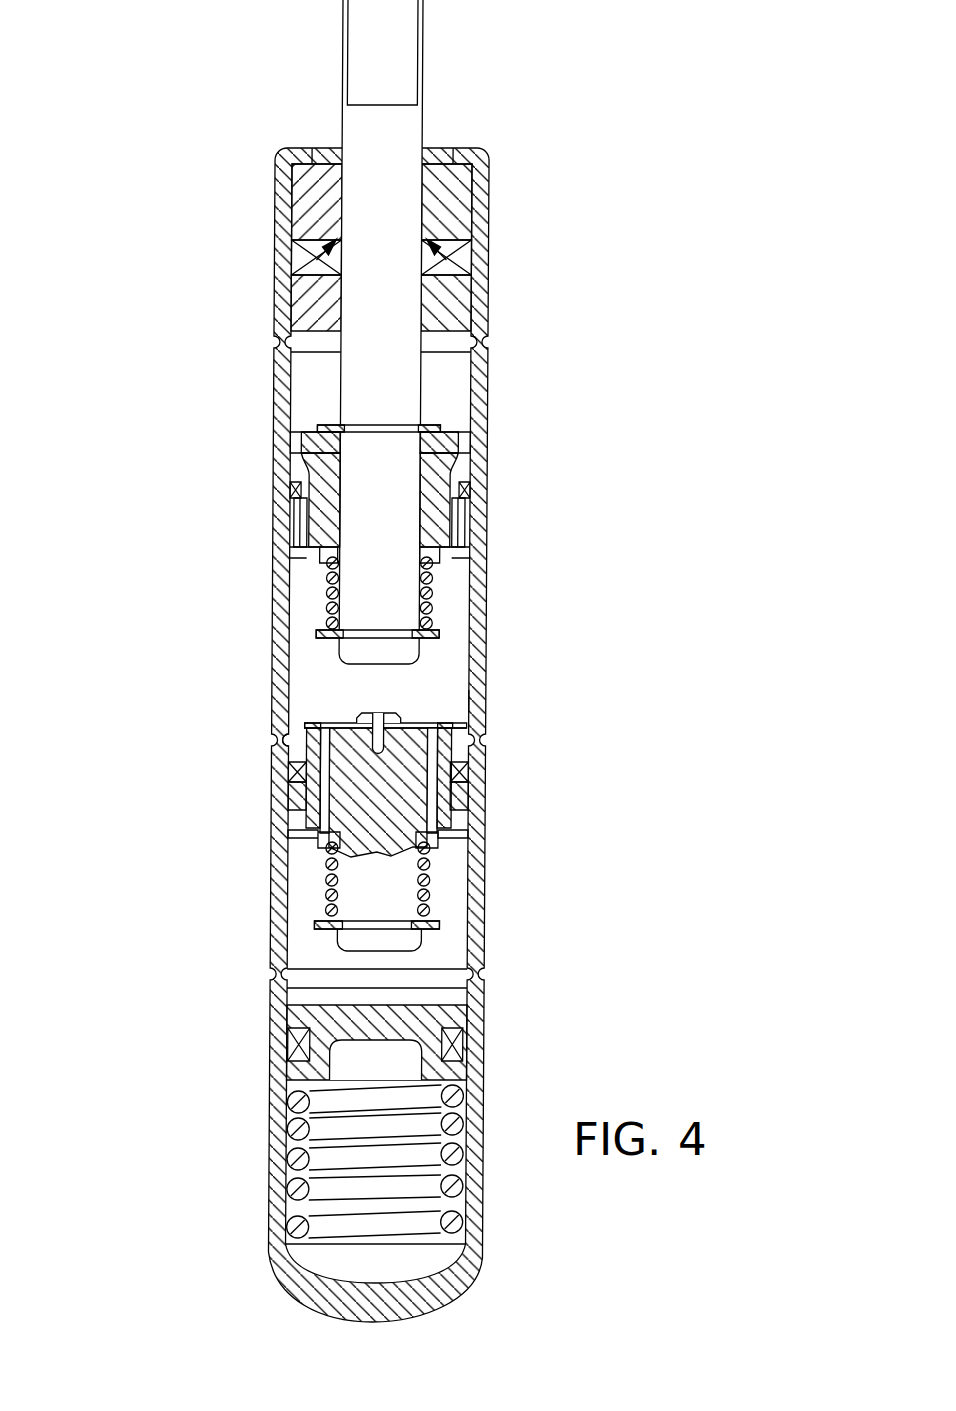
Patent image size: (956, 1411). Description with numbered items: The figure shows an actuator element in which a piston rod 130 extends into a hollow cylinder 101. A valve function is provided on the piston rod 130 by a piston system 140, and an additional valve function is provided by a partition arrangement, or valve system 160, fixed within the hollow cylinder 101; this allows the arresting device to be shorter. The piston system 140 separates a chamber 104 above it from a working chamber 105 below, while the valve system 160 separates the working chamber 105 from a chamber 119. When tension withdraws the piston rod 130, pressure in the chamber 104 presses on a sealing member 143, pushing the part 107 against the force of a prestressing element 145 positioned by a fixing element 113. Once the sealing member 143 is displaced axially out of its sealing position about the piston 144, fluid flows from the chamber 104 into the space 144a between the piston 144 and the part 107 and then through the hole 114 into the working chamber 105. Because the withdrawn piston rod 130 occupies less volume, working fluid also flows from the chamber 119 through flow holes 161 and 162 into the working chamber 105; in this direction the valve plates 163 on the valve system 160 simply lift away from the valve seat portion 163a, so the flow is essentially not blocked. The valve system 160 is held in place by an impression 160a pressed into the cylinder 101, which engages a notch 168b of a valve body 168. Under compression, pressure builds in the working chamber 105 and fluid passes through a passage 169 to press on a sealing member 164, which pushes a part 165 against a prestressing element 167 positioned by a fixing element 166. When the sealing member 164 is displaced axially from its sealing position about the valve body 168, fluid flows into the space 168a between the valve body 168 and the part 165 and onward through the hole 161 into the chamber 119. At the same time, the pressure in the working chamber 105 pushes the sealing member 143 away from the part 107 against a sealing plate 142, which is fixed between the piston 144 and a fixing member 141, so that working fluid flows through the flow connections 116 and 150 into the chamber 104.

The hollow cylinder 101 is at (485, 374).
The chamber 104 is at (316, 392).
The working chamber 105 is at (455, 700).
The part 107 is at (316, 562).
The fixing element 113 is at (320, 629).
The hole 114 is at (320, 560).
The flow connection 116 is at (296, 520).
The chamber 119 is at (316, 957).
The piston rod 130 is at (360, 128).
The piston system 140 is at (364, 514).
The fixing member 141 is at (443, 428).
The sealing plate 142 is at (449, 451).
The sealing member 143 is at (475, 488).
The piston 144 is at (453, 519).
The space 144a is at (460, 543).
The prestressing element 145 is at (442, 598).
The flow connection 150 is at (296, 446).
The valve system 160 is at (356, 810).
The impression 160a is at (282, 745).
The flow hole 161 is at (450, 942).
The flow hole 162 is at (462, 855).
The valve plate 163 is at (425, 705).
The valve seat portion 163a is at (471, 726).
The sealing member 164 is at (474, 770).
The part 165 is at (463, 827).
The fixing element 166 is at (320, 935).
The prestressing element 167 is at (318, 885).
The valve body 168 is at (300, 819).
The space 168a is at (298, 845).
The notch 168b is at (306, 723).
The passage 169 is at (292, 761).